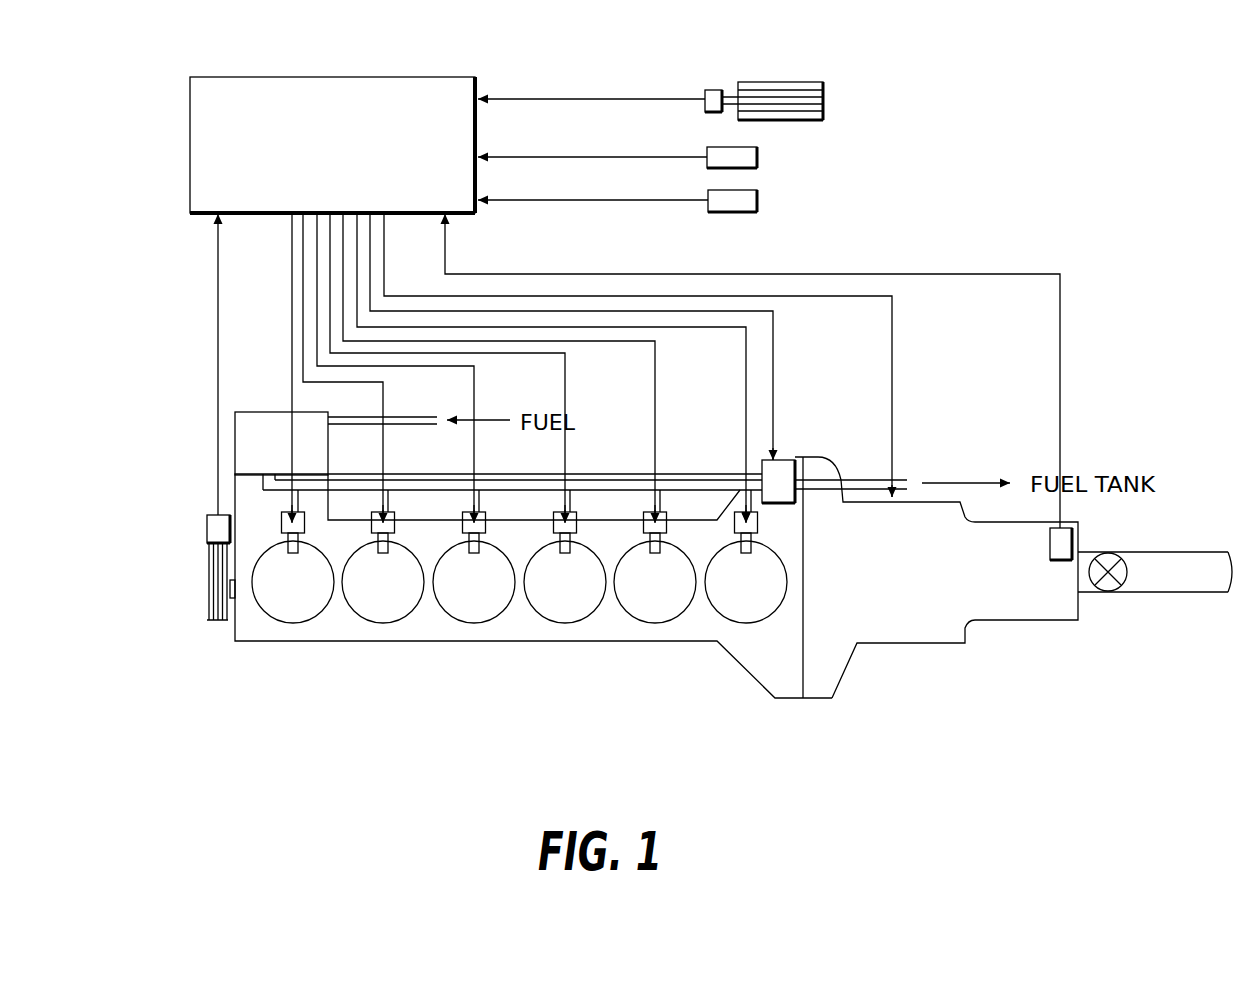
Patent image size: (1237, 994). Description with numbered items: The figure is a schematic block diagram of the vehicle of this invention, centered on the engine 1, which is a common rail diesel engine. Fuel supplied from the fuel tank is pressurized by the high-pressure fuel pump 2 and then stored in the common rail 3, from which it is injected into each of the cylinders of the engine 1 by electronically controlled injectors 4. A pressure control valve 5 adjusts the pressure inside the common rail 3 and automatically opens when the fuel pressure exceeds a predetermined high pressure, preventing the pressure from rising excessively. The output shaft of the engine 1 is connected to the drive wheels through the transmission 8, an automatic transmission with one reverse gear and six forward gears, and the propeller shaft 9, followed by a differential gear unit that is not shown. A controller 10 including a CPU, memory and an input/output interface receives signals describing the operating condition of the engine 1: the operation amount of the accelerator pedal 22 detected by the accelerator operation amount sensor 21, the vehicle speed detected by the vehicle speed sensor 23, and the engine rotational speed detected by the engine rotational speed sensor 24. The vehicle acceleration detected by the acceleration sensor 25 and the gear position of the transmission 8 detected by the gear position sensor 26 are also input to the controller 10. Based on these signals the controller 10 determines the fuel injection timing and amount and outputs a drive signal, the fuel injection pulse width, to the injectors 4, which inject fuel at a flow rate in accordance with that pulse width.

The engine 1 is at (517, 648).
The high-pressure fuel pump 2 is at (240, 452).
The common rail 3 is at (503, 480).
The injectors 4 is at (472, 555).
The pressure control valve 5 is at (785, 462).
The transmission 8 is at (895, 640).
The propeller shaft 9 is at (1177, 582).
The controller 10 is at (418, 85).
The accelerator operation amount sensor 21 is at (708, 91).
The accelerator pedal 22 is at (798, 84).
The vehicle speed sensor 23 is at (1060, 543).
The engine rotational speed sensor 24 is at (207, 531).
The acceleration sensor 25 is at (766, 158).
The gear position sensor 26 is at (740, 202).